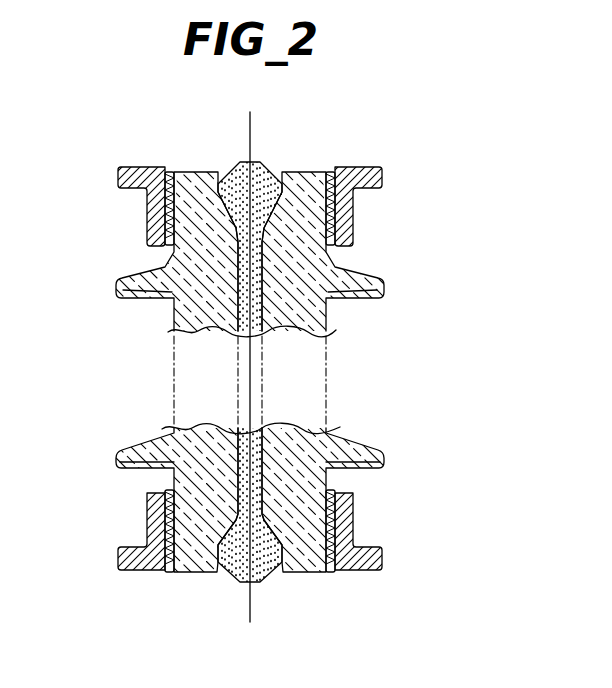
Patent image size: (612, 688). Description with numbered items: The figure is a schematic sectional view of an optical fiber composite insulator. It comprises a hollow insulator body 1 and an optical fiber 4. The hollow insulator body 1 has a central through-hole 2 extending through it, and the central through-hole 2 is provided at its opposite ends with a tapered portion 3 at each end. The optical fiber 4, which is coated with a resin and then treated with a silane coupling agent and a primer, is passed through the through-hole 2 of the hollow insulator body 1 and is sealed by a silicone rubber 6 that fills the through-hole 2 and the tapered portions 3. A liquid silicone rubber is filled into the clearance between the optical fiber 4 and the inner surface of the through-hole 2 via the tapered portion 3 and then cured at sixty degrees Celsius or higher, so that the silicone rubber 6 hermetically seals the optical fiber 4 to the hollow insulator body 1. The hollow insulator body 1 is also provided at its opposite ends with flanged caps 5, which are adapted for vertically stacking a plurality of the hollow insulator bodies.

The hollow insulator body 1 is at (396, 292).
The central through-hole 2 is at (257, 312).
The tapered portion 3 is at (328, 253).
The optical fiber 4 is at (252, 125).
The flanged cap 5 is at (154, 160).
The silicone rubber 6 is at (262, 452).